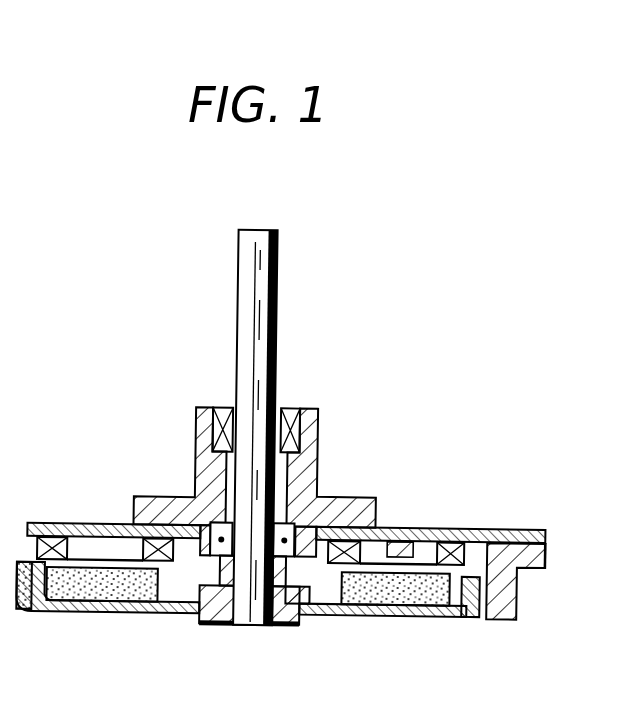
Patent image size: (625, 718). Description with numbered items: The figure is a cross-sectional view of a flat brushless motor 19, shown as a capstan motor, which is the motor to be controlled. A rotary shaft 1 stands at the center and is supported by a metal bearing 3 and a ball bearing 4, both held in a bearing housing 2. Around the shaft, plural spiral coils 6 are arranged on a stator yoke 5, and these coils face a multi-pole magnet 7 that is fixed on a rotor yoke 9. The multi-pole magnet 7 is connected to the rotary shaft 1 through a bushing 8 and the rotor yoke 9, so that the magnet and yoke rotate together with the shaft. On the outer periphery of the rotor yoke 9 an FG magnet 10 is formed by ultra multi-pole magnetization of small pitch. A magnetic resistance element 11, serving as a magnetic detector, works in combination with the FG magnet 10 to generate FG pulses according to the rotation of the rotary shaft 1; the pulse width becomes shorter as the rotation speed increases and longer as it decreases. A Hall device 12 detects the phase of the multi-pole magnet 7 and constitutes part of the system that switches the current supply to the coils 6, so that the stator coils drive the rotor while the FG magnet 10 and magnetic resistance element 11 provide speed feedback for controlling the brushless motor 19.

The rotary shaft 1 is at (264, 327).
The bearing housing 2 is at (318, 436).
The metal bearing 3 is at (318, 421).
The ball bearing 4 is at (335, 497).
The stator yoke 5 is at (548, 528).
The spiral coils 6 is at (447, 561).
The multi-pole magnet 7 is at (347, 616).
The bushing 8 is at (283, 628).
The rotor yoke 9 is at (73, 616).
The FG magnet 10 is at (468, 616).
The magnetic resistance element 11 is at (518, 597).
The Hall device 12 is at (400, 540).
The brushless motor 19 is at (410, 332).